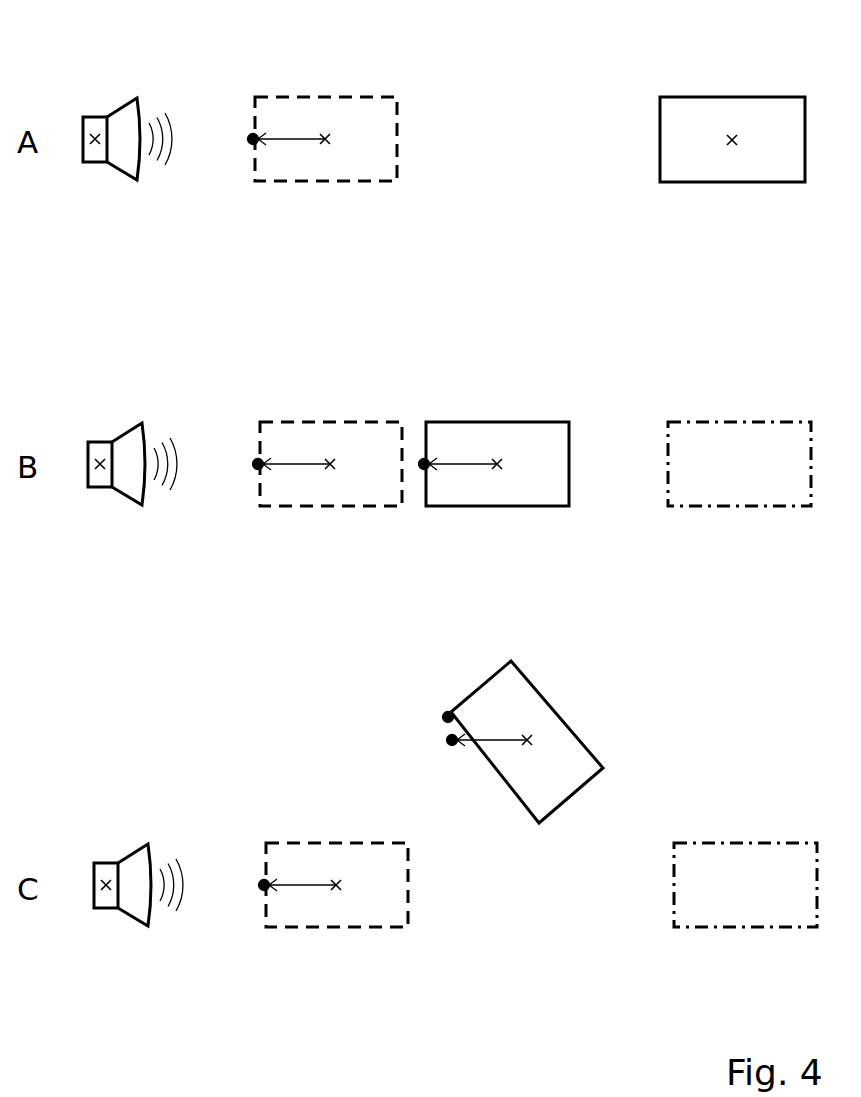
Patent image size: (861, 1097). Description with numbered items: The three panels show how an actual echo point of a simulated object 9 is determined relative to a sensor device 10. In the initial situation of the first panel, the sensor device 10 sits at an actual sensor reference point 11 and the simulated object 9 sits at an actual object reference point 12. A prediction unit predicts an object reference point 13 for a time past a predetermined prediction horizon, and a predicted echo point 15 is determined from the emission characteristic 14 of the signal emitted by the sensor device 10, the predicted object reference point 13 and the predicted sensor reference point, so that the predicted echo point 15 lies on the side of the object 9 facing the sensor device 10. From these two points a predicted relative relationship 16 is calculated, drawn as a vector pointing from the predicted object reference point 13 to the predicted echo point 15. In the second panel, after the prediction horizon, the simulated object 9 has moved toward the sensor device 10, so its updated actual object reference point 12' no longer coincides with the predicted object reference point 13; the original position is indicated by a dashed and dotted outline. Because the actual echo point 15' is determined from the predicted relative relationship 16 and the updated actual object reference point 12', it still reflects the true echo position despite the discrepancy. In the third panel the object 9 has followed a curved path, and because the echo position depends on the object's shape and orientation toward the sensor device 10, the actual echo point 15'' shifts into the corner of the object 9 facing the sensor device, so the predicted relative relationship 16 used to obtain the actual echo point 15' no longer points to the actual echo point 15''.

In FIG. 4A, the simulated object 9 is at (686, 97).
In FIG. 4B, the simulated object 9 is at (552, 422).
In FIG. 4C, the simulated object 9 is at (596, 758).
In FIG. 4A, the sensor device 10 is at (97, 163).
In FIG. 4B, the sensor device 10 is at (102, 488).
In FIG. 4C, the sensor device 10 is at (108, 909).
In FIG. 4A, the actual sensor reference point 11 is at (95, 133).
In FIG. 4B, the actual sensor reference point 11 is at (100, 458).
In FIG. 4C, the actual sensor reference point 11 is at (106, 879).
In FIG. 4A, the actual object reference point 12 is at (740, 101).
In FIG. 4B, the updated actual object reference point 12' is at (506, 425).
In FIG. 4C, the updated actual object reference point 12' is at (562, 717).
In FIG. 4A, the predicted object reference point 13 is at (325, 135).
In FIG. 4B, the predicted object reference point 13 is at (330, 460).
In FIG. 4C, the predicted object reference point 13 is at (336, 881).
In FIG. 4A, the emission characteristic 14 is at (168, 82).
In FIG. 4B, the emission characteristic 14 is at (173, 407).
In FIG. 4C, the emission characteristic 14 is at (179, 828).
In FIG. 4A, the predicted echo point 15 is at (233, 112).
In FIG. 4B, the predicted echo point 15 is at (238, 437).
In FIG. 4C, the predicted echo point 15 is at (244, 858).
In FIG. 4B, the actual echo point 15' is at (416, 502).
In FIG. 4C, the actual echo point 15' is at (443, 784).
In FIG. 4C, the actual echo point 15'' is at (426, 689).
In FIG. 4A, the predicted relative relationship 16 is at (280, 138).
In FIG. 4B, the predicted relative relationship 16 is at (285, 463).
In FIG. 4C, the predicted relative relationship 16 is at (291, 884).